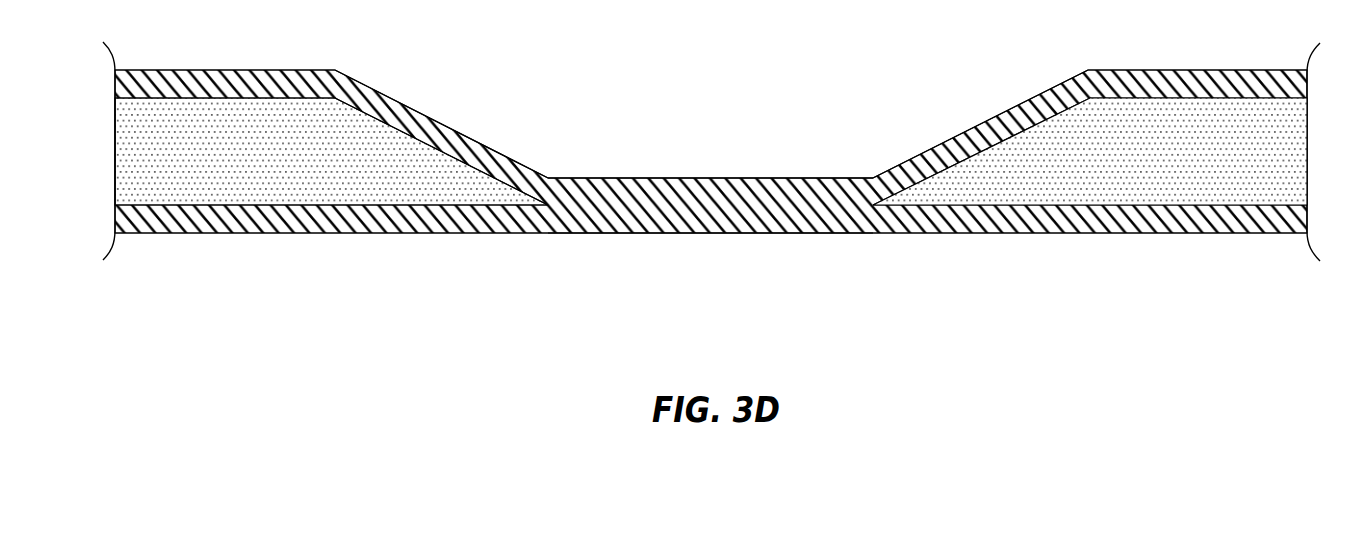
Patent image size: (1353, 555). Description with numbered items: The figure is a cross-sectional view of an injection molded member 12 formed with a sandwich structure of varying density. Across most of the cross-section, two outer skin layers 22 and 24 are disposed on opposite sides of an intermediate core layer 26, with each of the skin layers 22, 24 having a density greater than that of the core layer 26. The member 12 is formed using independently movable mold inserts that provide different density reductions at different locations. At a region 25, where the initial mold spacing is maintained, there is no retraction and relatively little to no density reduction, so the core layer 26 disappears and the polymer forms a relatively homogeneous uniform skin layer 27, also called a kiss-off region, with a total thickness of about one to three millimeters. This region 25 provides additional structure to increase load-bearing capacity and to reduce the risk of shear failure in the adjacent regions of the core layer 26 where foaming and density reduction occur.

The injection molded member 12 is at (172, 270).
The outer skin layer 22 is at (248, 70).
The outer skin layer 24 is at (322, 234).
The region of no density reduction 25 is at (880, 147).
The intermediate core layer 26 is at (1167, 165).
The skin layer 27 is at (808, 214).